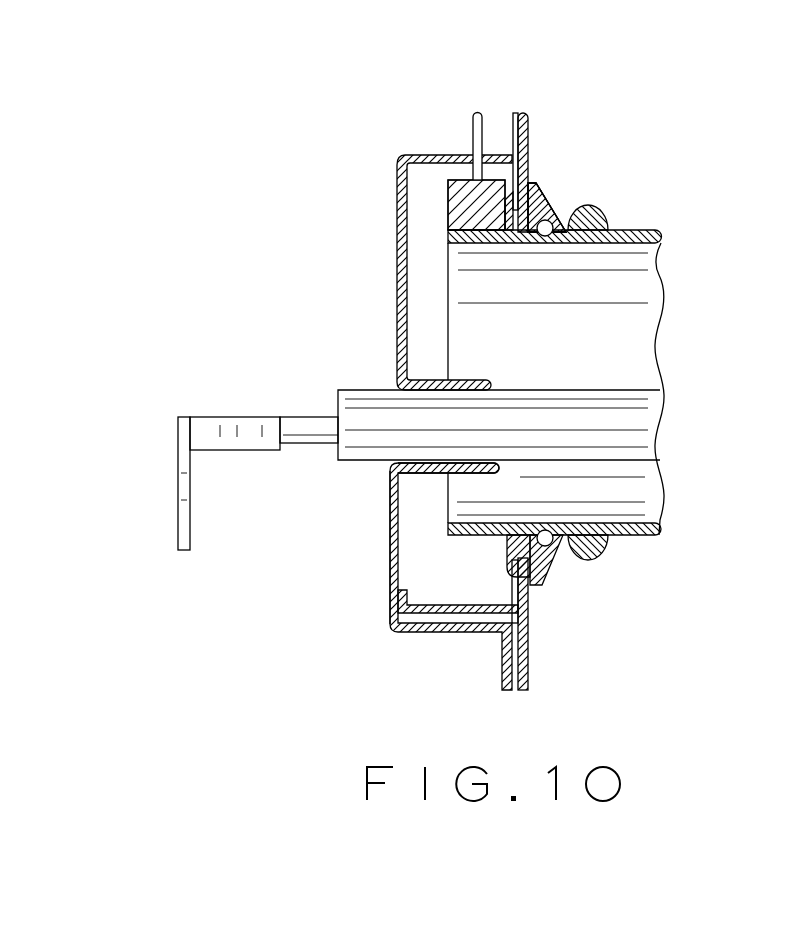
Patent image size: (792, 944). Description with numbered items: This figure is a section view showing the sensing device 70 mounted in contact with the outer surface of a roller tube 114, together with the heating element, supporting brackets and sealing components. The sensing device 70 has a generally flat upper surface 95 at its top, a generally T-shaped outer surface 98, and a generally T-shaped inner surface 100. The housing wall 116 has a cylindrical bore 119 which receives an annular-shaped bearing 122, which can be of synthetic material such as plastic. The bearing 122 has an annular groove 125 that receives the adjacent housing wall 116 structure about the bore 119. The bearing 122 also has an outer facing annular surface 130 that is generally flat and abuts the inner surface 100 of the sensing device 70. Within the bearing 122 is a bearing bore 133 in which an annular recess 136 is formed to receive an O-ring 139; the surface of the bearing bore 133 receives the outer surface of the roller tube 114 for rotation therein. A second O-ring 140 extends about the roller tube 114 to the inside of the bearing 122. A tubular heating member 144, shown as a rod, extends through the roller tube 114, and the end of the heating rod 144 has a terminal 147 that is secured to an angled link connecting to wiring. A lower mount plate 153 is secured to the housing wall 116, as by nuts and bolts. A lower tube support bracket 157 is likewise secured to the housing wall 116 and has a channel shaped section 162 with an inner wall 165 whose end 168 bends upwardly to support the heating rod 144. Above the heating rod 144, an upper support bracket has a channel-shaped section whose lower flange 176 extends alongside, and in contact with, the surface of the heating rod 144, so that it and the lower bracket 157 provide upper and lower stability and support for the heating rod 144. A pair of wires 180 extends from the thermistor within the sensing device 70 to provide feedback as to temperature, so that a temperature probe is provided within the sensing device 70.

The sensing device 70 is at (445, 207).
The upper surface 95 is at (460, 180).
The outer surface 98 is at (450, 220).
The inner surface 100 is at (533, 200).
The roller tube 114 is at (660, 537).
The housing wall 116 is at (527, 130).
The cylindrical bore 119 is at (507, 555).
The bearing 122 is at (564, 188).
The annular groove 125 is at (530, 603).
The outer facing annular surface 130 is at (503, 207).
The bearing bore 133 is at (520, 243).
The annular recess 136 is at (557, 210).
The O-ring 139 is at (553, 237).
The O-ring 140 is at (605, 213).
The heating member 144 is at (613, 421).
The terminal 147 is at (312, 417).
The lower mount plate 153 is at (480, 613).
The lower tube support bracket 157 is at (374, 577).
The channel shaped section 162 is at (388, 533).
The inner wall 165 is at (420, 473).
The end 168 is at (500, 463).
The lower flange 176 is at (468, 380).
The wires 180 is at (475, 113).